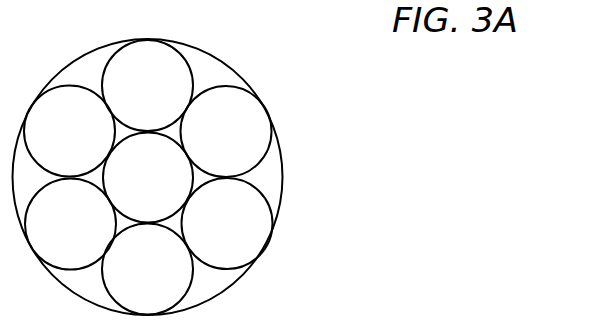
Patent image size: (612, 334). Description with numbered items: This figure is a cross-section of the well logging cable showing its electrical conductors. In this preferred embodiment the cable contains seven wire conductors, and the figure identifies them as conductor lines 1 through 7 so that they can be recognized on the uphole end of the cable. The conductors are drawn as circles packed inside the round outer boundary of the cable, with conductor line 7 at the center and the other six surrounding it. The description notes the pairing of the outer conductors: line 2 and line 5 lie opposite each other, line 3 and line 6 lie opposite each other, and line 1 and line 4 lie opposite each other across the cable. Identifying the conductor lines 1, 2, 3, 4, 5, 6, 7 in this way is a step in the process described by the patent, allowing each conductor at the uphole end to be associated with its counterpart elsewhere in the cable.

The conductor line 1 is at (150, 98).
The conductor line 2 is at (73, 147).
The conductor line 3 is at (78, 238).
The conductor line 4 is at (156, 278).
The conductor line 5 is at (233, 237).
The conductor line 6 is at (230, 147).
The conductor line 7 is at (155, 191).